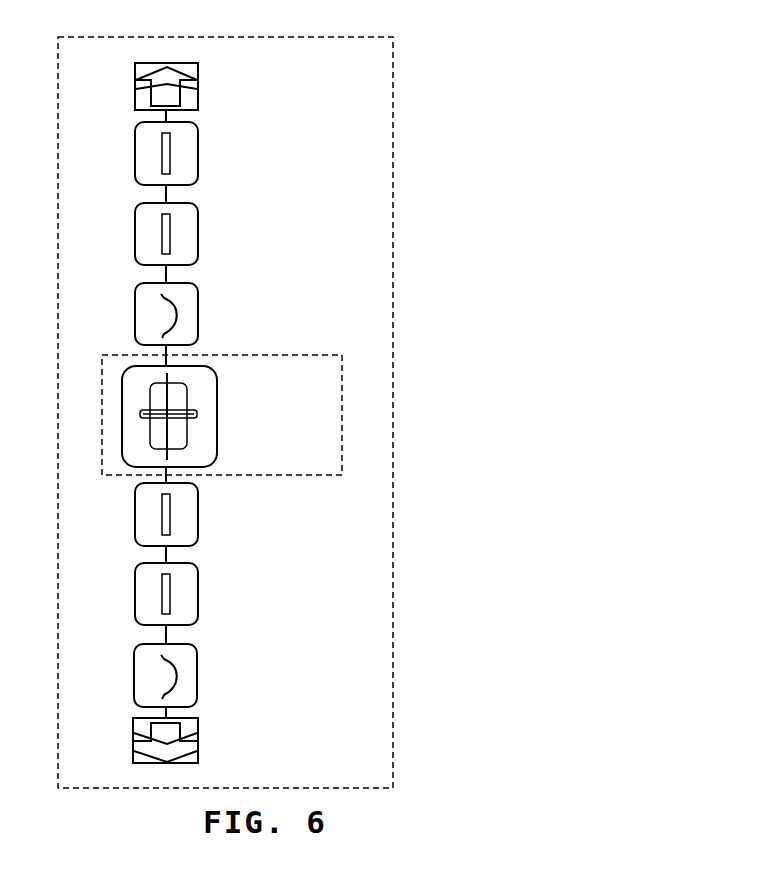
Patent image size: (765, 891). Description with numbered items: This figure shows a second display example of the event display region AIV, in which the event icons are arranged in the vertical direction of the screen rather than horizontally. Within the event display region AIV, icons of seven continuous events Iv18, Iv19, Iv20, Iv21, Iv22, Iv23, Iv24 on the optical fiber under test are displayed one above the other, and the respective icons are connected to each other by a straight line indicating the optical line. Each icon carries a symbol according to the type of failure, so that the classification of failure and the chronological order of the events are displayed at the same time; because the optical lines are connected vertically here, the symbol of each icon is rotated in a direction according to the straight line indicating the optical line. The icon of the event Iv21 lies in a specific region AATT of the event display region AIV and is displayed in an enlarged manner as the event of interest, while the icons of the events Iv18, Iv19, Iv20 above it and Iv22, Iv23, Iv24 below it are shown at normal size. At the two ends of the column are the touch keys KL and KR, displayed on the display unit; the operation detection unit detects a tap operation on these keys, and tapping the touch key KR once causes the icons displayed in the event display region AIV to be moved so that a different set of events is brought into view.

The event display region AIV is at (395, 158).
The specific region AATT is at (287, 355).
The touch key KL is at (202, 88).
The event icon Iv18 is at (202, 152).
The event icon Iv19 is at (202, 240).
The event icon Iv20 is at (202, 315).
The event icon Iv21 is at (217, 412).
The event icon Iv22 is at (202, 510).
The event icon Iv23 is at (202, 598).
The event icon Iv24 is at (200, 675).
The touch key KR is at (200, 738).